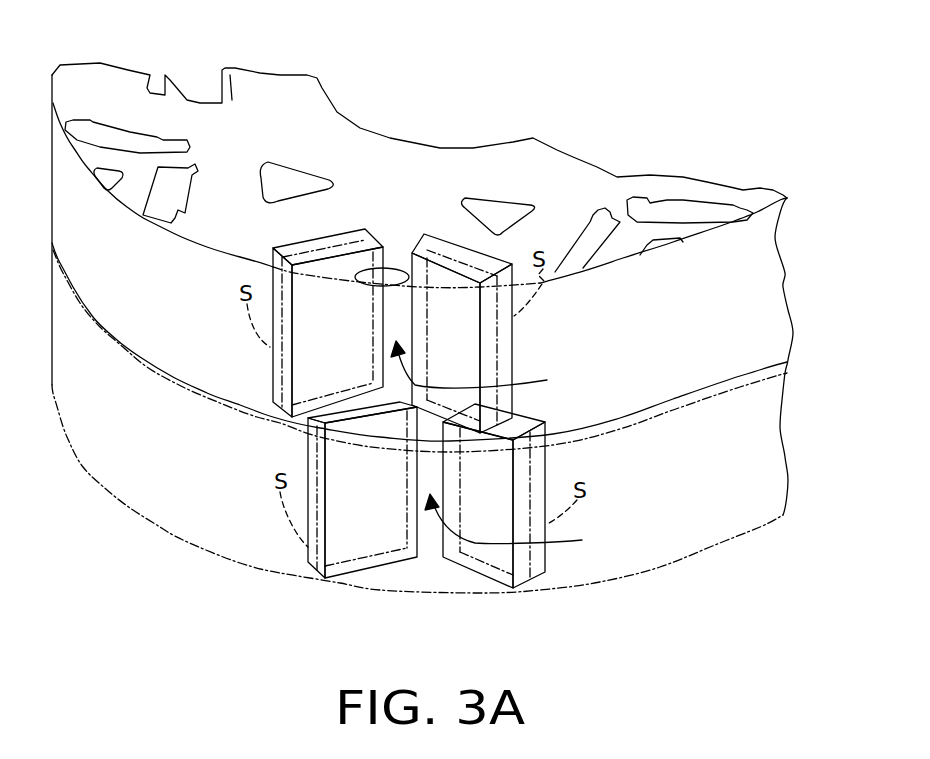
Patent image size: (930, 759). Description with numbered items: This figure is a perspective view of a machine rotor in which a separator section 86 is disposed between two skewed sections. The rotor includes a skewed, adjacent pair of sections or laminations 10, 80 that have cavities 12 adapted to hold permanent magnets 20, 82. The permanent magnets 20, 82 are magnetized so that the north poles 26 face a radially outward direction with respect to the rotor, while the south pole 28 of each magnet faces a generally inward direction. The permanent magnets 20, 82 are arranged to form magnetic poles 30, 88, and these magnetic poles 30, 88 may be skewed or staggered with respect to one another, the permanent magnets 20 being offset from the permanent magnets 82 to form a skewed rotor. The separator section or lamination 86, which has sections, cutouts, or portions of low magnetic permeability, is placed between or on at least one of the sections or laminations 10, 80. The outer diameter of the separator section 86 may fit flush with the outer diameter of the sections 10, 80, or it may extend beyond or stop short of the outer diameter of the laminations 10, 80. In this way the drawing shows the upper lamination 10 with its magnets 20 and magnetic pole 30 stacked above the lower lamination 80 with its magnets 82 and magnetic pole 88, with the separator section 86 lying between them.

The section or lamination 10 is at (575, 158).
The cavity 12 is at (352, 242).
The permanent magnet 20 is at (327, 237).
The north pole 26 is at (308, 368).
The south pole 28 is at (307, 236).
The magnetic pole 30 is at (483, 366).
The section or lamination 80 is at (566, 586).
The permanent magnet 82 is at (341, 553).
The separator section or lamination 86 is at (180, 386).
The magnetic pole 88 is at (518, 523).